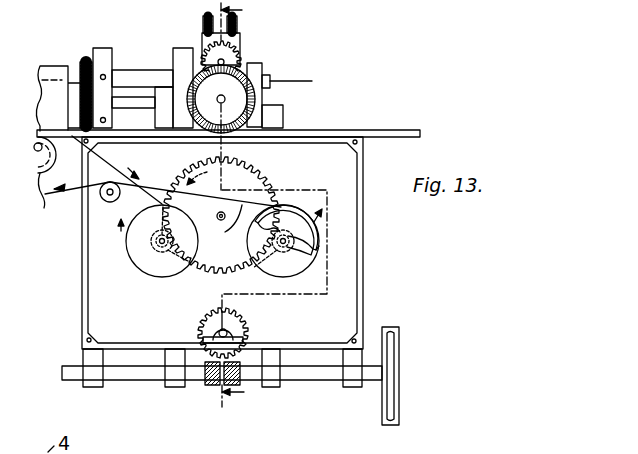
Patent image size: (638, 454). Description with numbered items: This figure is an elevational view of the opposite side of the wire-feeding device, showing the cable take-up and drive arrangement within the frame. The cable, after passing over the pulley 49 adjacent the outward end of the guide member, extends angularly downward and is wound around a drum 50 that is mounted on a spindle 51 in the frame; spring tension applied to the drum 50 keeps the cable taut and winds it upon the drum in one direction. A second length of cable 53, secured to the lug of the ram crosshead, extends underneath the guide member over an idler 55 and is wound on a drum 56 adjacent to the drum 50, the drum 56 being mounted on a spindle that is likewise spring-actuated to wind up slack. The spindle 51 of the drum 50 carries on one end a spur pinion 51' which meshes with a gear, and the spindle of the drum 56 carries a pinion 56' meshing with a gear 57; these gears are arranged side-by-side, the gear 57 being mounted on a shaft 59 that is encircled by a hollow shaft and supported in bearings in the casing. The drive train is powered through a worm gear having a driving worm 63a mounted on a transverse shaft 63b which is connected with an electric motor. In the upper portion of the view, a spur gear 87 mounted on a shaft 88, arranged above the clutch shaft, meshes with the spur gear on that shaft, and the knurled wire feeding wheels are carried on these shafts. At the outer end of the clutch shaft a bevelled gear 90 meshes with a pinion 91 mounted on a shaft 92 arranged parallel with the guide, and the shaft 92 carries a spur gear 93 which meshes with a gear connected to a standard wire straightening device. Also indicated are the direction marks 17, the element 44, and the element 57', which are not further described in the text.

The direction of feed 17 is at (243, 204).
The thread 44 is at (176, 171).
The pulley 49 is at (76, 203).
The drum 50 is at (165, 268).
The spindle 51 is at (134, 270).
The spur pinion 51' is at (141, 233).
The length of cable 53 is at (221, 215).
The idler 55 is at (108, 202).
The drum 56 is at (294, 261).
The pinion 56' is at (326, 254).
The gear 57 is at (286, 205).
The band end 57' is at (363, 247).
The shaft 59 is at (217, 215).
The driving worm 63a is at (212, 385).
The transverse shaft 63b is at (145, 372).
The spur gear 87 is at (240, 43).
The shaft 88 is at (225, 61).
The bevelled gear 90 is at (262, 96).
The pinion 91 is at (190, 90).
The shaft 92 is at (127, 100).
The spur gear 93 is at (83, 62).